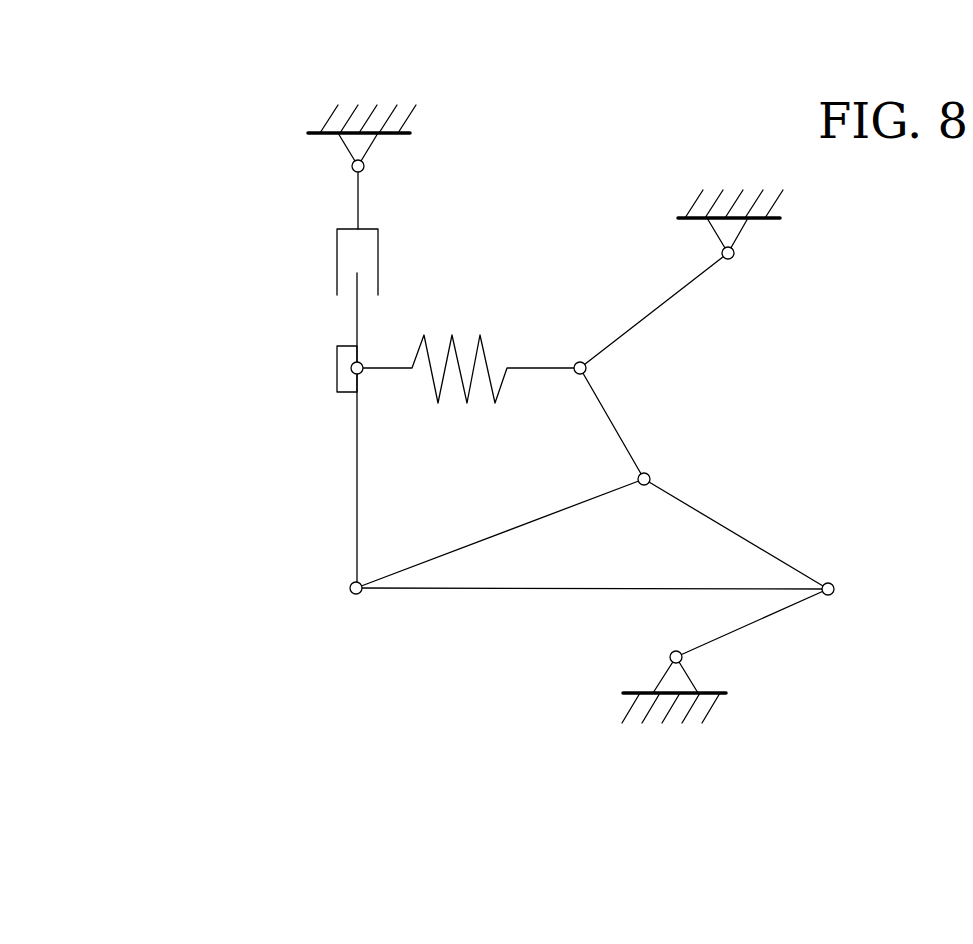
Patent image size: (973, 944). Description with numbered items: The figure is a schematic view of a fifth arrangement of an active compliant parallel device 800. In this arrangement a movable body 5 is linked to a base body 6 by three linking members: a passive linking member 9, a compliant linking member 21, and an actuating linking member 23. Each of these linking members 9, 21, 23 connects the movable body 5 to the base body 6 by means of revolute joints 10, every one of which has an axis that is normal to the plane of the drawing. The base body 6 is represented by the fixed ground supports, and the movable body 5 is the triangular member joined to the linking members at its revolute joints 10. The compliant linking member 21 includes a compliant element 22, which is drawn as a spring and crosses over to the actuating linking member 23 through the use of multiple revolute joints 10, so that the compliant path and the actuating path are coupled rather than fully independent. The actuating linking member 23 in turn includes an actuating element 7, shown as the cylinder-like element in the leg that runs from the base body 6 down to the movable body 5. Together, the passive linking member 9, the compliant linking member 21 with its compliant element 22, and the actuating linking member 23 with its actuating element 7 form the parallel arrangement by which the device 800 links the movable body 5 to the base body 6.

The movable body 5 is at (792, 545).
The base body 6 is at (687, 188).
The actuating element 7 is at (323, 264).
The passive linking member 9 is at (858, 632).
The revolute joints 10 is at (373, 165).
The compliant linking member 21 is at (748, 256).
The compliant element 22 is at (461, 327).
The actuating linking member 23 is at (302, 165).
The active compliant parallel device 800 is at (203, 734).